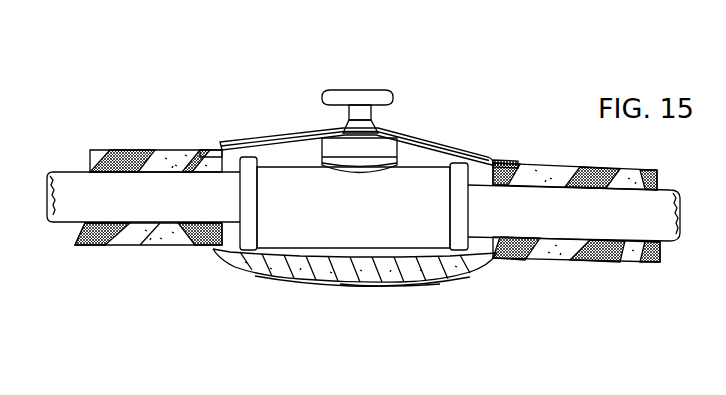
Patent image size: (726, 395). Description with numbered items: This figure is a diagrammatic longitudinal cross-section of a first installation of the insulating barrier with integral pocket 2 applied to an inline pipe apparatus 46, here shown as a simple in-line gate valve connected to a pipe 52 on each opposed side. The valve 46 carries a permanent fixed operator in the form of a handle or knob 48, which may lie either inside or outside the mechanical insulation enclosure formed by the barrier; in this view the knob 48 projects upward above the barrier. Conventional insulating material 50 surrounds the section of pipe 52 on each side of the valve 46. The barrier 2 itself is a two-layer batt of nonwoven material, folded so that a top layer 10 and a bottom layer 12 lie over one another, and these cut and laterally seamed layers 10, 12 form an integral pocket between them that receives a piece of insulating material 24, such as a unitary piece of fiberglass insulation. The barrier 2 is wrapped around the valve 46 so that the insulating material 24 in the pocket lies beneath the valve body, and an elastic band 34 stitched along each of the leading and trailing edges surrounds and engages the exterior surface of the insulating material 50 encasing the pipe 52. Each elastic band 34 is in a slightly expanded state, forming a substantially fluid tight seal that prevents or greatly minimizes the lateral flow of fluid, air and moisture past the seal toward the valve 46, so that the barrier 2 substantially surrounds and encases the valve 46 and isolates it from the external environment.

The insulating barrier with integral pocket 2 is at (460, 113).
The top layer 10 is at (433, 286).
The bottom layer 12 is at (382, 286).
The insulating material 24 is at (320, 280).
The elastic band 34 is at (210, 150).
The inline pipe apparatus 46 is at (303, 215).
The handle or knob 48 is at (337, 90).
The insulating material 50 is at (175, 150).
The pipe 52 is at (151, 210).